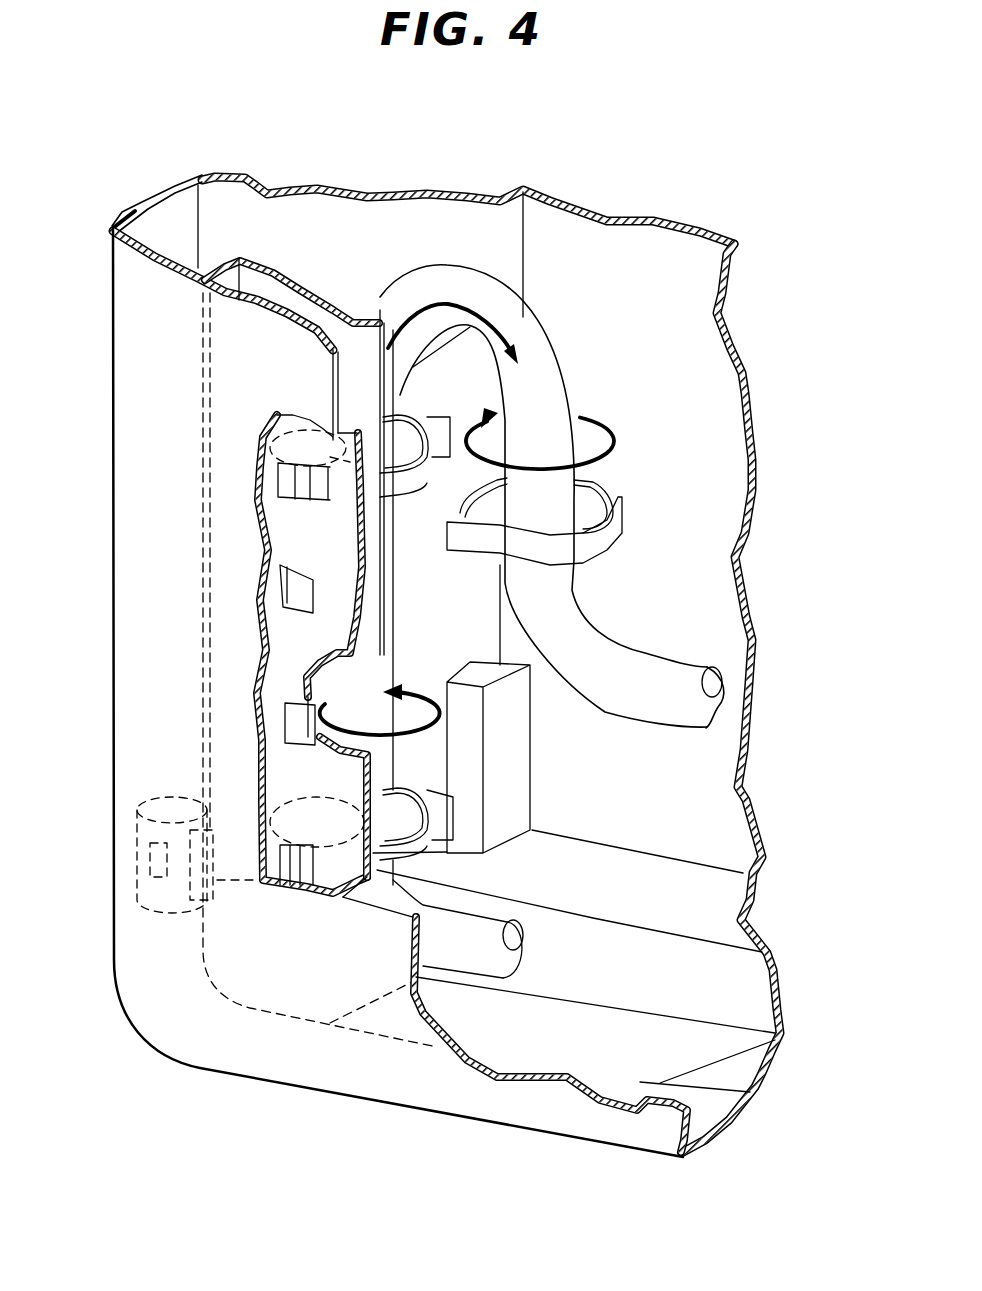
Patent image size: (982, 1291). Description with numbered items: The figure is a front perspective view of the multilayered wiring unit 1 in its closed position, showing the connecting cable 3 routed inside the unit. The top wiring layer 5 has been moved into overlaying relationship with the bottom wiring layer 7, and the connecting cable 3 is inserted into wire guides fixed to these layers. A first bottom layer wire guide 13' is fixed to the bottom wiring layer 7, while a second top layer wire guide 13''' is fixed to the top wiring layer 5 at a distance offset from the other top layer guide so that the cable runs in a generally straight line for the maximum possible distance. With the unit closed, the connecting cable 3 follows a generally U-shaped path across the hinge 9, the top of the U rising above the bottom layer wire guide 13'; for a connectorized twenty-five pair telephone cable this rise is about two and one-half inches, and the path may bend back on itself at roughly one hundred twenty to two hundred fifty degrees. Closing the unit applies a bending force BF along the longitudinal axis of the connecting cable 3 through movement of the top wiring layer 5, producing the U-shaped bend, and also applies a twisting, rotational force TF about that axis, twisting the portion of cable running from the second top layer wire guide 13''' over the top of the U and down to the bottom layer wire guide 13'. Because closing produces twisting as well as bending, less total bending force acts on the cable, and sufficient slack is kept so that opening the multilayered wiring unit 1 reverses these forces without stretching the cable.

The multilayered wiring unit 1 is at (490, 1145).
The connecting cable 3 is at (552, 362).
The top wiring layer 5 is at (317, 1090).
The bottom wiring layer 7 is at (783, 1040).
The hinge 9 is at (155, 900).
The first bottom layer wire guide 13' is at (588, 512).
The second top layer wire guide 13''' is at (351, 891).
The bending force BF is at (457, 303).
The twisting, rotational force TF is at (617, 447).